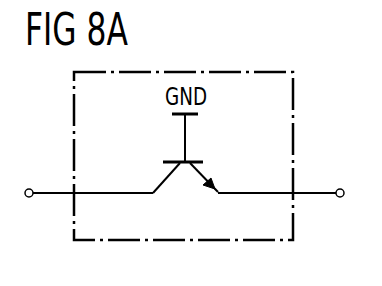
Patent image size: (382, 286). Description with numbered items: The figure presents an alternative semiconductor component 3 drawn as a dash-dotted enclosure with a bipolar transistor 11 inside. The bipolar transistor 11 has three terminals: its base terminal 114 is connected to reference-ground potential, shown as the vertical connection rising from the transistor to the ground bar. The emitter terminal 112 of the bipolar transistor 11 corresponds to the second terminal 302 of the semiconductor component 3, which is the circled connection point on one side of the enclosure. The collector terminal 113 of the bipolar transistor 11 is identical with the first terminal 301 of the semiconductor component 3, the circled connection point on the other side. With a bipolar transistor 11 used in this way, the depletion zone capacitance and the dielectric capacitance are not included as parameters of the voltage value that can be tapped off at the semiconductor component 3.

The semiconductor component 3 is at (246, 71).
The bipolar transistor 11 is at (190, 168).
The emitter terminal 112 is at (219, 188).
The collector terminal 113 is at (163, 178).
The base terminal 114 is at (186, 138).
The first terminal 301 is at (53, 191).
The second terminal 302 is at (314, 190).